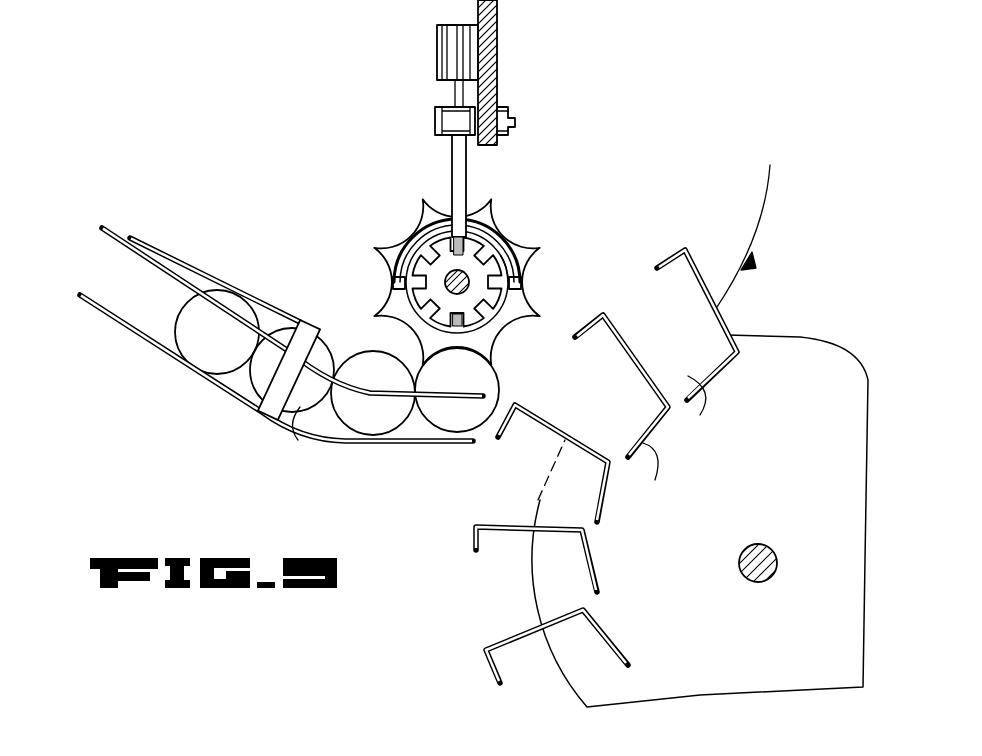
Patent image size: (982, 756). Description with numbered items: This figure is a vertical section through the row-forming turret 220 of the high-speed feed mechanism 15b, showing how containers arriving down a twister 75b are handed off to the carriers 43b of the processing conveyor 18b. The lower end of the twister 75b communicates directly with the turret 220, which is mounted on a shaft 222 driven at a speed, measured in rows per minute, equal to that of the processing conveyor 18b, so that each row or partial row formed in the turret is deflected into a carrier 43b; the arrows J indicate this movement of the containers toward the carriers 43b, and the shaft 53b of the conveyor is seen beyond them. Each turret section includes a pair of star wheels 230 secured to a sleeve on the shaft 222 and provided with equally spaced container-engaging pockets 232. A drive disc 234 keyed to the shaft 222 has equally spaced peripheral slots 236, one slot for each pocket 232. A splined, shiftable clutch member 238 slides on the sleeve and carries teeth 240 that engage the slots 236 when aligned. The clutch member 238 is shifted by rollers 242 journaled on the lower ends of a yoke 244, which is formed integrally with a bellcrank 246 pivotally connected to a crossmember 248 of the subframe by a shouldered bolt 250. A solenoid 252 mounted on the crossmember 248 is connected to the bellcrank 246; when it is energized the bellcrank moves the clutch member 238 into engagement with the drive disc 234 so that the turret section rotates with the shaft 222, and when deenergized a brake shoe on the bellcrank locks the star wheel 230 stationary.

The high-speed feed mechanism 15b is at (292, 198).
The processing conveyor 18b is at (774, 209).
The carriers 43b is at (592, 550).
The drum shaft 53b is at (767, 550).
The twister 75b is at (190, 256).
The row-forming turret 220 is at (546, 295).
The shaft 222 is at (481, 245).
The star wheels 230 is at (390, 310).
The container-engaging pockets 232 is at (437, 207).
The drive disc 234 is at (466, 272).
The slots 236 is at (433, 311).
The shiftable clutch member 238 is at (514, 268).
The teeth 240 is at (421, 243).
The rollers 242 is at (524, 274).
The yoke 244 is at (427, 222).
The bellcrank 246 is at (468, 157).
The crossmember 248 is at (491, 52).
The shouldered bolt 250 is at (517, 122).
The solenoids 252 is at (437, 49).
The ball motion direction J is at (358, 426).